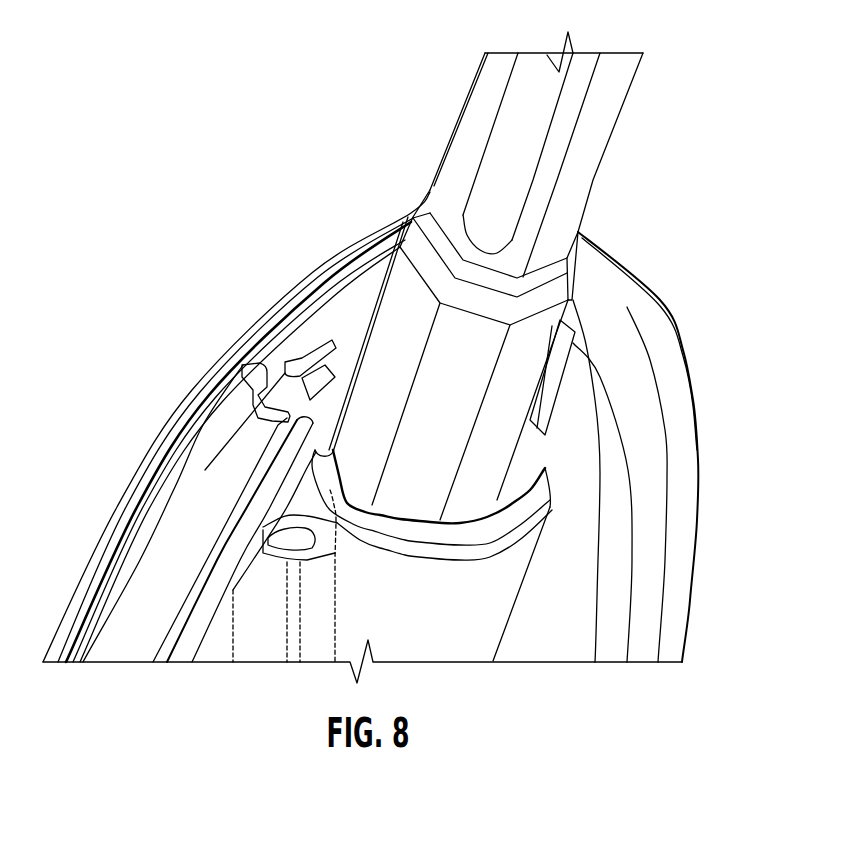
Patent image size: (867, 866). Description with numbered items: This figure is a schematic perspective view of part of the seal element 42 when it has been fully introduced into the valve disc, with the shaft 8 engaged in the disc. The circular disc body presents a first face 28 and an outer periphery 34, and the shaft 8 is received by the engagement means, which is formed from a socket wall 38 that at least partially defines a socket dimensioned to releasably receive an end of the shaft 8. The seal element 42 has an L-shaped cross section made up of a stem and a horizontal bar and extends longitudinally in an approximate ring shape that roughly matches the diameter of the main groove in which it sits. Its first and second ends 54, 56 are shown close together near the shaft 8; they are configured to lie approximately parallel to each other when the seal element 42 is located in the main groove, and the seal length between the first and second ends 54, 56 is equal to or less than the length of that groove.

The shaft 8 is at (528, 75).
The first face 28 is at (597, 472).
The outer periphery 34 is at (190, 520).
The socket wall 38 is at (560, 402).
The seal element 42 is at (317, 277).
The first end 54 is at (253, 363).
The second end 56 is at (242, 370).